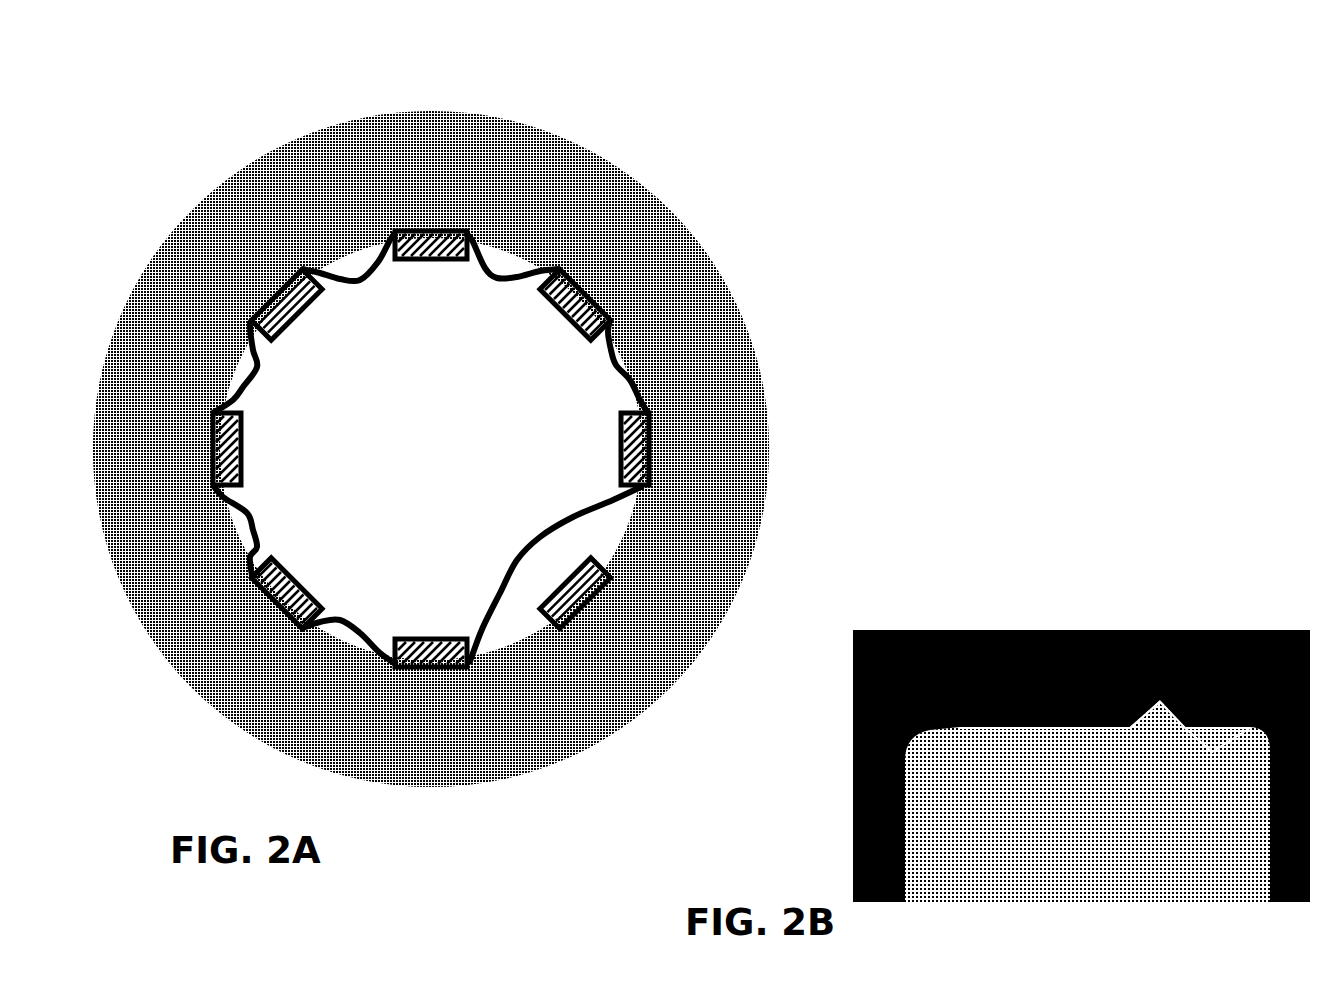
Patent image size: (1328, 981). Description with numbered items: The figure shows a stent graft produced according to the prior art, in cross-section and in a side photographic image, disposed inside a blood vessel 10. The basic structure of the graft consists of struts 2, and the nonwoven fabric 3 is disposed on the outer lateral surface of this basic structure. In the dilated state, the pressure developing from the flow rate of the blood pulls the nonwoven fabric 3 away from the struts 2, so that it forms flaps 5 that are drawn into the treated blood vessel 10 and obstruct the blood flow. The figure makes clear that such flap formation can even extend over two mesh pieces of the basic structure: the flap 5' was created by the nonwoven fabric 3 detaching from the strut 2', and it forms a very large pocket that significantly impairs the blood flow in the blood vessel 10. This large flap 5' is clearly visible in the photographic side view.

In FIG. 2A, the strut 2 is at (752, 440).
In FIG. 2A, the strut 2' is at (695, 603).
In FIG. 2B, the strut 2' is at (1105, 589).
In FIG. 2A, the nonwoven fabric 3 is at (432, 240).
In FIG. 2B, the nonwoven fabric 3 is at (1055, 798).
In FIG. 2A, the flap 5 is at (430, 337).
In FIG. 2A, the flap 5' is at (557, 678).
In FIG. 2B, the flap 5' is at (1226, 625).
In FIG. 2A, the blood vessel 10 is at (600, 242).